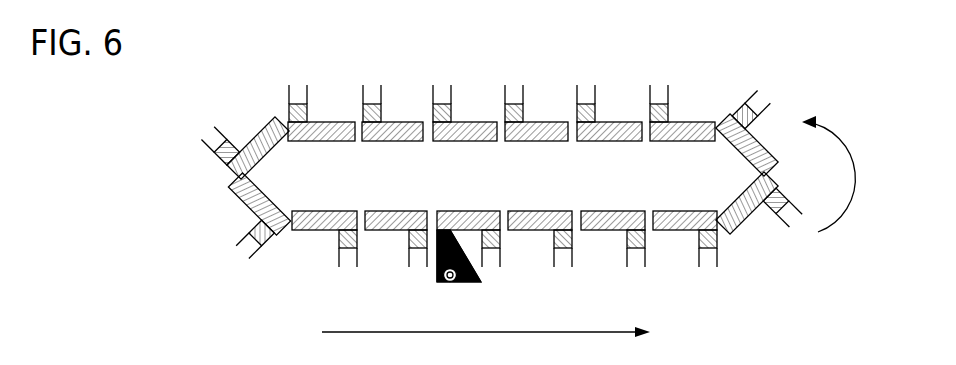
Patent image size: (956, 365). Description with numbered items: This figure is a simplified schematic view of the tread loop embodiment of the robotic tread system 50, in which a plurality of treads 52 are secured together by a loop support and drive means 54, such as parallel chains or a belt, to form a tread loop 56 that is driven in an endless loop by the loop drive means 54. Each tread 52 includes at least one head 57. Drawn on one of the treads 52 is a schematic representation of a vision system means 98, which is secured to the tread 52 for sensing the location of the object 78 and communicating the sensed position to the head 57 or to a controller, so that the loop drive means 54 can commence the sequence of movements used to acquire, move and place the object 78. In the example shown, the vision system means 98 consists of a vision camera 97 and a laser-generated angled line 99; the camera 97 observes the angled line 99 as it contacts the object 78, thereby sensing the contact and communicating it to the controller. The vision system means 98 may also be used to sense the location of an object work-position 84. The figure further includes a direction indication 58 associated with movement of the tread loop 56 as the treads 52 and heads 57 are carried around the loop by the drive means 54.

The robotic tread system 50 is at (735, 66).
The tread 52 is at (548, 122).
The loop support and drive means 54 is at (720, 142).
The tread loop 56 is at (418, 165).
The head 57 is at (650, 120).
The flow direction 58 is at (460, 333).
The object 78 is at (449, 283).
The second object work-position 84 is at (690, 278).
The vision camera 97 is at (455, 230).
The vision system means 98 is at (429, 278).
The laser-generated angled line 99 is at (462, 250).